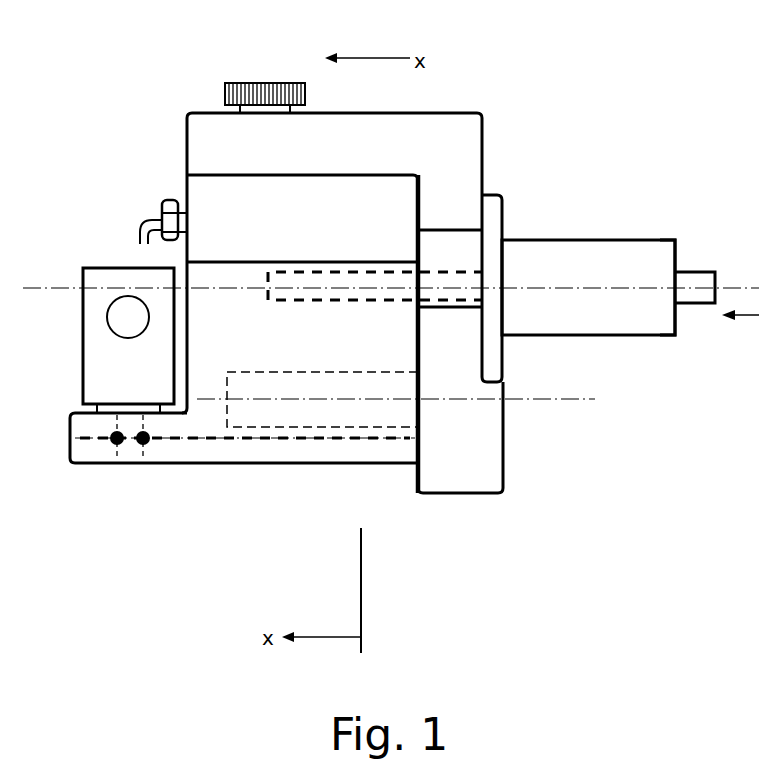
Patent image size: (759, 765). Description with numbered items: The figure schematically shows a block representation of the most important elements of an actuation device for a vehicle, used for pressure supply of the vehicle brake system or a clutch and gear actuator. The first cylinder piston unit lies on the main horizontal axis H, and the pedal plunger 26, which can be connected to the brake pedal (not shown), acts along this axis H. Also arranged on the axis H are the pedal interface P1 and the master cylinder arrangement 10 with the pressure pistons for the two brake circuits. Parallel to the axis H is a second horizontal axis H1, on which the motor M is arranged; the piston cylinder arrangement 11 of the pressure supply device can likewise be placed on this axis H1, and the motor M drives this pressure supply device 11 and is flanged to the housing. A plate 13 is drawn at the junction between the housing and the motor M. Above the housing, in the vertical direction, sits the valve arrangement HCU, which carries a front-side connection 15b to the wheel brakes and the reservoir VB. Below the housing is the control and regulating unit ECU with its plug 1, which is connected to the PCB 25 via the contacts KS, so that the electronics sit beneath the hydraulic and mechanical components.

The plug 1 is at (128, 296).
The master cylinder arrangement 10 is at (307, 270).
The piston of the pressure supply device 11 is at (303, 430).
The flange plate 13 is at (493, 197).
The hydraulic port fitting 15b is at (168, 198).
The PCB 25 is at (372, 440).
The pedal plunger 26 is at (697, 280).
The valve arrangement HCU is at (245, 215).
The reservoir VB is at (482, 113).
The axis of the first cylinder piston unit H is at (552, 290).
The pedal interface P1 is at (648, 262).
The second horizontal axis H1 is at (415, 400).
The contacts KS is at (125, 455).
The control and regulating unit ECU is at (188, 465).
The motor M is at (490, 495).